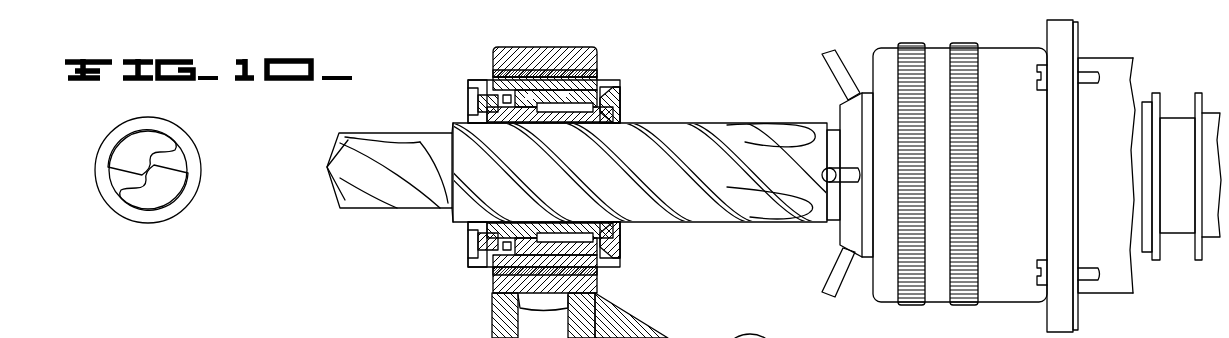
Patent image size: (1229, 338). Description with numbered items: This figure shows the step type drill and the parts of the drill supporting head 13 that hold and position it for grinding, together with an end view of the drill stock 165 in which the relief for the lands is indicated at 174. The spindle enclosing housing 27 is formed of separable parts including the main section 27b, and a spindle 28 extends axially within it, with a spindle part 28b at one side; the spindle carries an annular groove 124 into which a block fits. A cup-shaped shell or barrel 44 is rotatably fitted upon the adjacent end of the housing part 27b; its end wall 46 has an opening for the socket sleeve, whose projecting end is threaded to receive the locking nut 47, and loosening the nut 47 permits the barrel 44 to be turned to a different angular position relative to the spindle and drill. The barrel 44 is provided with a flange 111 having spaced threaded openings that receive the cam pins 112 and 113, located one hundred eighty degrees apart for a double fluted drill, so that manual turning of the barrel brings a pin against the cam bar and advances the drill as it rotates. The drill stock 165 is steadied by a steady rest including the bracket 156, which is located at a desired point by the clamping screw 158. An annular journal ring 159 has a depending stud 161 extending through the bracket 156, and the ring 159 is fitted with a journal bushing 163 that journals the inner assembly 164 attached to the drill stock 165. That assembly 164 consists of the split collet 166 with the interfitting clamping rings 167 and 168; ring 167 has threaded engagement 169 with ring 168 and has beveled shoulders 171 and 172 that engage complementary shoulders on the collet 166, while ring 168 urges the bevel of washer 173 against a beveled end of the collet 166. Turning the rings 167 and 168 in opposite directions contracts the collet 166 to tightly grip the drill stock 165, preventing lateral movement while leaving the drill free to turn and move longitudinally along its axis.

The drill supporting head 13 is at (1149, 300).
The spindle enclosing housing 27 is at (1113, 58).
The main section of housing 27b is at (1130, 78).
The spindle 28 is at (1204, 86).
The spindle part 28b is at (1212, 235).
The cup-shaped shell or barrel 44 is at (940, 52).
The end wall 46 is at (868, 60).
The locking nut 47 is at (850, 112).
The flange 111 is at (1053, 152).
The cam pin 112 is at (1088, 83).
The cam pin 113 is at (1090, 268).
The annular groove 124 is at (1172, 232).
The bracket 156 is at (650, 336).
The clamping screw 158 is at (762, 337).
The annular journal ring 159 is at (577, 50).
The depending stud 161 is at (525, 325).
The journal bushing 163 is at (597, 73).
The inner assembly 164 is at (460, 243).
The drill stock 165 is at (193, 148).
The split collet 166 is at (593, 89).
The clamping ring 167 is at (622, 105).
The clamping ring 168 is at (467, 102).
The threaded engagement 169 is at (534, 90).
The beveled shoulder 171 is at (618, 240).
The beveled shoulder 172 is at (522, 255).
The washer 173 is at (484, 105).
The lands relief 174 is at (128, 140).